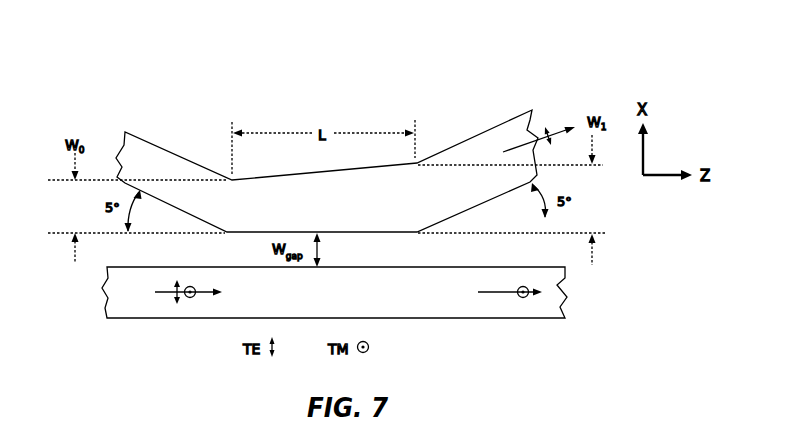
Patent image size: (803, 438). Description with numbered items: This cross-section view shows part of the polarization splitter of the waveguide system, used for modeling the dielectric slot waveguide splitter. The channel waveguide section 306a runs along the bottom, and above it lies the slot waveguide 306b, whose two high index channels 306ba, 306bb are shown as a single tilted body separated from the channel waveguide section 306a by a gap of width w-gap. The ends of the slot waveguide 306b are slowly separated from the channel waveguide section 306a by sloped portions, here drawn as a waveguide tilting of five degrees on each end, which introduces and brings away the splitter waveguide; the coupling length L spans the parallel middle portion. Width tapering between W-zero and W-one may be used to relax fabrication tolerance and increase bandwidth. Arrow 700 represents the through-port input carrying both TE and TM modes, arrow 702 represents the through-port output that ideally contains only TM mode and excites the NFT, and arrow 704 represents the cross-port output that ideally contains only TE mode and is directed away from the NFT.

The channel waveguide section 306a is at (322, 303).
The slot waveguide 306b is at (327, 136).
The high index channel 306ba is at (327, 171).
The high index channel 306bb is at (382, 215).
The through-port input 700 is at (163, 293).
The through-port output 702 is at (488, 293).
The cross-port output 704 is at (556, 125).